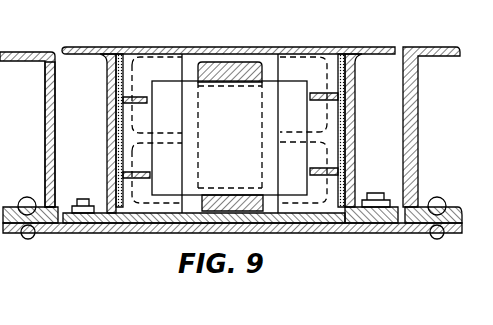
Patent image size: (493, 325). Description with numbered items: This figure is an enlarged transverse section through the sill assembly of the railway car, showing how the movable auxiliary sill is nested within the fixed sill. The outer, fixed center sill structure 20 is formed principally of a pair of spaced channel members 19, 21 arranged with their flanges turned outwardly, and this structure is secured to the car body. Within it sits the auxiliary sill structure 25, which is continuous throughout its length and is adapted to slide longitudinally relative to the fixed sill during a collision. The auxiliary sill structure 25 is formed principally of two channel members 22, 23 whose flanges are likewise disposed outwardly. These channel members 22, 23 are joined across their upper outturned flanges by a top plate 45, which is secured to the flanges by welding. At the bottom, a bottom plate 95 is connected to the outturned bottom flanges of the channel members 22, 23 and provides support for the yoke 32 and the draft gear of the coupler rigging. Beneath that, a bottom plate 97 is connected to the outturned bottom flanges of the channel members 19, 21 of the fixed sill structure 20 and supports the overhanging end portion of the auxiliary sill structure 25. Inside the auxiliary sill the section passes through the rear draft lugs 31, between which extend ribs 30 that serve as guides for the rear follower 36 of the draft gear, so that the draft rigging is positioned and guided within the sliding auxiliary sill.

The channel member 19 is at (418, 137).
The center sill structure 20 is at (40, 52).
The channel member 21 is at (45, 112).
The channel member 22 is at (356, 137).
The channel member 23 is at (107, 133).
The auxiliary sill structure 25 is at (367, 130).
The ribs 30 is at (136, 97).
The rear draft lugs 31 is at (138, 67).
The yoke 32 is at (245, 74).
The rear follower 36 is at (240, 138).
The top plate 45 is at (214, 47).
The bottom plate 95 is at (297, 215).
The bottom plate 97 is at (352, 226).